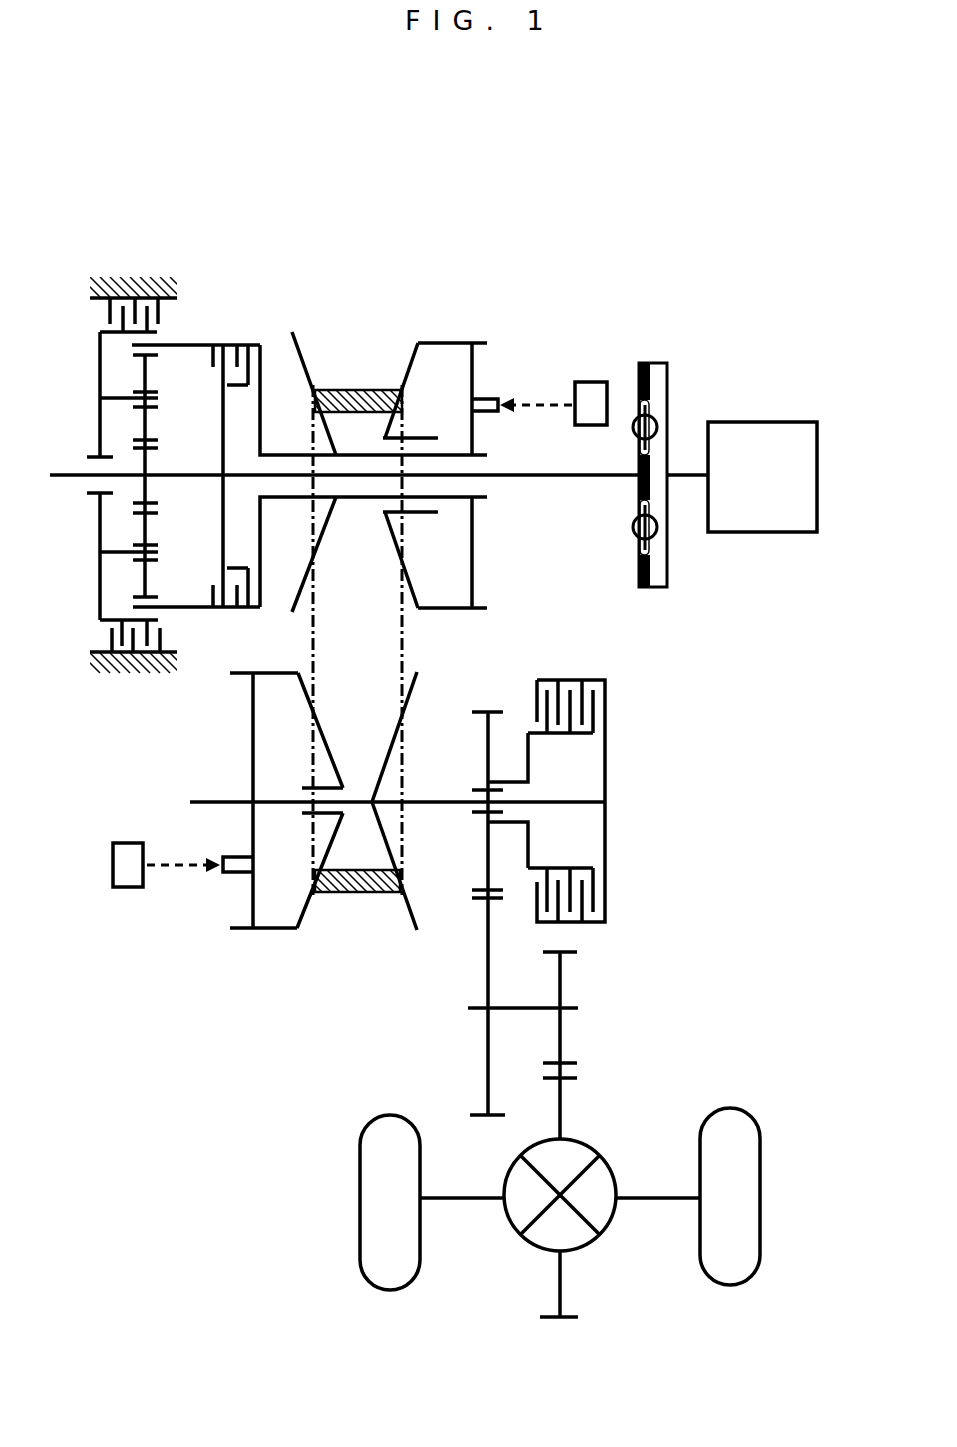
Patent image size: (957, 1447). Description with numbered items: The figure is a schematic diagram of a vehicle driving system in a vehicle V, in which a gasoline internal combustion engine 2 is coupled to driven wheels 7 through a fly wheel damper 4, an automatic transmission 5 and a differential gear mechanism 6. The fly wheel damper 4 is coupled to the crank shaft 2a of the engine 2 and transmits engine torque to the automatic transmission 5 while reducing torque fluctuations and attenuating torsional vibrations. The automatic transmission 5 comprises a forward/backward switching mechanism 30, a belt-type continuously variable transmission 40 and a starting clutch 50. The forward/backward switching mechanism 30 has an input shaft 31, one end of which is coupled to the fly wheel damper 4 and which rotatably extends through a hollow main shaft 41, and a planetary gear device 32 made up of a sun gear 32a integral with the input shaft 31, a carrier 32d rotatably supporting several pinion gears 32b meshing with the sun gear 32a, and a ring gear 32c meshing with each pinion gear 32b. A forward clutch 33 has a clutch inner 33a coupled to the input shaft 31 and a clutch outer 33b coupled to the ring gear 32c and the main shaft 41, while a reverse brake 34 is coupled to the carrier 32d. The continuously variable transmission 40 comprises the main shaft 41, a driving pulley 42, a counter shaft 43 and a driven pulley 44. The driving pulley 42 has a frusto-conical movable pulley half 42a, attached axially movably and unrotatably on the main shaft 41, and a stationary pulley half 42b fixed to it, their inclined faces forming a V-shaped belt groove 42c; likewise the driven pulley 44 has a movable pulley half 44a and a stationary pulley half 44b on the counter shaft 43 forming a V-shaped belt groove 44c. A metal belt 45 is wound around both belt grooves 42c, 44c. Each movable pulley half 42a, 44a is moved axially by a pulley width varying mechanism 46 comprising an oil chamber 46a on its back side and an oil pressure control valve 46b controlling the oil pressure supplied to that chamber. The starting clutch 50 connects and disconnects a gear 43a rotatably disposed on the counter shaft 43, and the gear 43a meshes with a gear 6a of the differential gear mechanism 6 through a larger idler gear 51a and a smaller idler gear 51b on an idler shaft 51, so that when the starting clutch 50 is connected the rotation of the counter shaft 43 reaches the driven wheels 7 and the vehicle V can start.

The vehicle V is at (689, 194).
The internal combustion engine 2 is at (768, 418).
The crank shaft 2a is at (684, 468).
The fly wheel damper 4 is at (655, 590).
The automatic transmission 5 is at (410, 231).
The forward/backward switching mechanism 30 is at (249, 267).
The input shaft 31 is at (558, 478).
The planetary gear device 32 is at (197, 321).
The sun gear 32a is at (148, 484).
The pinion gear 32b is at (150, 443).
The ring gear 32c is at (248, 345).
The carrier 32d is at (100, 379).
The forward clutch 33 is at (214, 626).
The clutch inner 33a is at (237, 388).
The clutch outer 33b is at (253, 610).
The reverse brake 34 is at (110, 312).
The continuously variable transmission 40 is at (321, 1024).
The main shaft 41 is at (282, 455).
The driving pulley 42 is at (472, 329).
The movable pulley half 42a is at (425, 343).
The stationary pulley half 42b is at (318, 380).
The V-shaped belt groove 42c is at (355, 520).
The counter shaft 43 is at (583, 800).
The gear 43a is at (486, 888).
The driven pulley 44 is at (260, 930).
The movable pulley half 44a is at (290, 930).
The stationary pulley half 44b is at (397, 900).
The V-shaped belt groove 44c is at (353, 745).
The metal belt 45 is at (405, 643).
The pulley width varying mechanism 46 is at (558, 331).
The oil chamber 46a is at (463, 383).
The oil pressure control valve 46b is at (593, 380).
The starting clutch 50 is at (565, 700).
The idler shaft 51 is at (568, 1006).
The larger idler gear 51a is at (485, 968).
The smaller idler gear 51b is at (560, 948).
The differential gear mechanism 6 is at (595, 1146).
The gear 6a is at (568, 1320).
The driven wheels 7 is at (385, 1113).